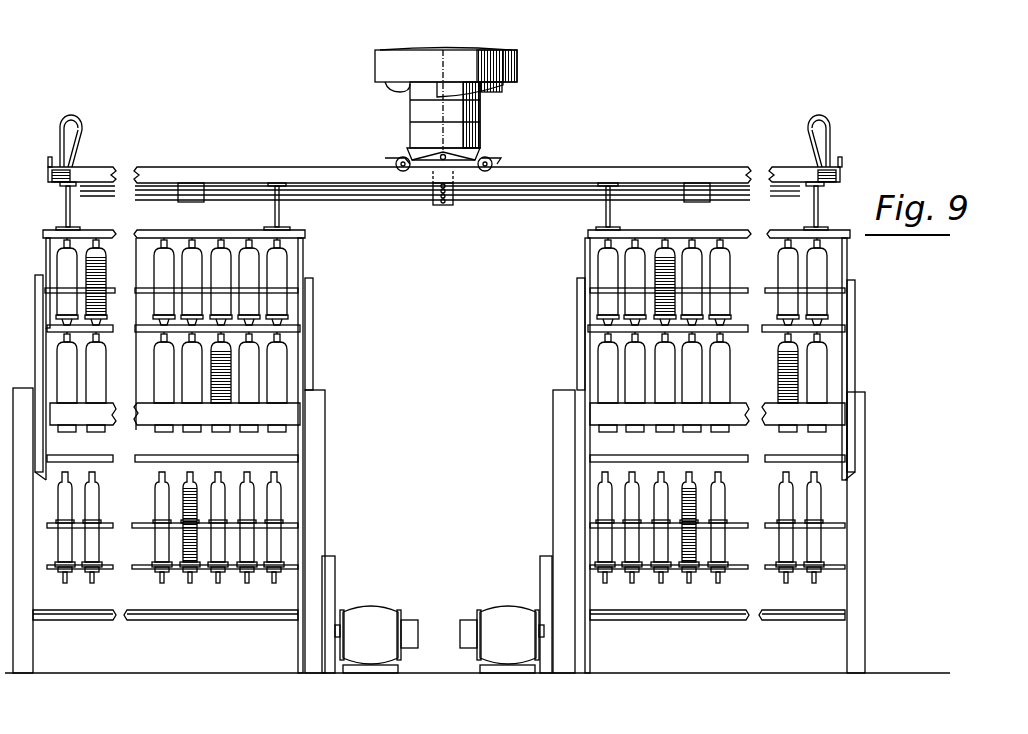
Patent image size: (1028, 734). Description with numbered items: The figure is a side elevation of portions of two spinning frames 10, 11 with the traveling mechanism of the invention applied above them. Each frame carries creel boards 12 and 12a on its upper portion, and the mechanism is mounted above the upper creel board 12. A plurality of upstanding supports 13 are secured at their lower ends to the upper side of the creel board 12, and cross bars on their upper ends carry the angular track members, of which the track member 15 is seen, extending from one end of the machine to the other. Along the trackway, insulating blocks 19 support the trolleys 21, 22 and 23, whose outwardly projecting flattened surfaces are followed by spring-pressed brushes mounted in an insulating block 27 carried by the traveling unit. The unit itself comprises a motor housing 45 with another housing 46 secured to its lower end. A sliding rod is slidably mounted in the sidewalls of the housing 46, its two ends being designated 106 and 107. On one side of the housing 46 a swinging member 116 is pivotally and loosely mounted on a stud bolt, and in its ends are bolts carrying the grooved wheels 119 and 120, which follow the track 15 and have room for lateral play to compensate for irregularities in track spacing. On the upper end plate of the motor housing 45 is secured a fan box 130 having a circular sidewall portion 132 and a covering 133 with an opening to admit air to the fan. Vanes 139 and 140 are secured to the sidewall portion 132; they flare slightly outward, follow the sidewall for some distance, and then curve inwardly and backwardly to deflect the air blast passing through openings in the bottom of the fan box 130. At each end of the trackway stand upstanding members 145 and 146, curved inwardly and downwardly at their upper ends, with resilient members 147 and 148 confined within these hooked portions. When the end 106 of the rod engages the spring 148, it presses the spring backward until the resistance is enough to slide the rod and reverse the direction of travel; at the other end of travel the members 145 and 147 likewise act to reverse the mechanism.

The spinning frame portion 10 is at (322, 457).
The spinning frame portion 11 is at (556, 460).
The upper creel board 12 is at (306, 233).
The creel board 12a is at (306, 325).
The upstanding support 13 is at (72, 212).
The angular track member 15 is at (660, 156).
The insulating block 19 is at (182, 202).
The trolley 21 is at (486, 191).
The trolley 22 is at (510, 196).
The trolley 23 is at (540, 201).
The insulating block 27 is at (432, 200).
The motor housing 45 is at (412, 108).
The housing 46 is at (480, 151).
The rod end 106 is at (392, 158).
The rod end 107 is at (499, 158).
The swinging member 116 is at (420, 156).
The grooved wheel 119 is at (490, 170).
The grooved wheel 120 is at (397, 168).
The fan box 130 is at (379, 71).
The circular sidewall portion 132 is at (521, 62).
The covering 133 is at (500, 50).
The vane 139 is at (393, 88).
The vane 140 is at (487, 92).
The upstanding member 145 is at (830, 131).
The upstanding member 146 is at (61, 132).
The resilient member 147 is at (810, 142).
The resilient member 148 is at (81, 140).